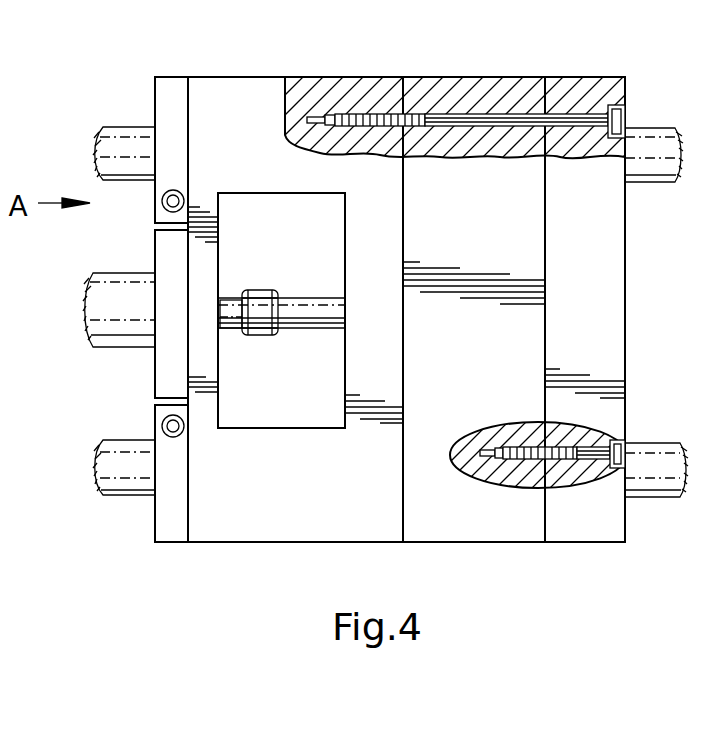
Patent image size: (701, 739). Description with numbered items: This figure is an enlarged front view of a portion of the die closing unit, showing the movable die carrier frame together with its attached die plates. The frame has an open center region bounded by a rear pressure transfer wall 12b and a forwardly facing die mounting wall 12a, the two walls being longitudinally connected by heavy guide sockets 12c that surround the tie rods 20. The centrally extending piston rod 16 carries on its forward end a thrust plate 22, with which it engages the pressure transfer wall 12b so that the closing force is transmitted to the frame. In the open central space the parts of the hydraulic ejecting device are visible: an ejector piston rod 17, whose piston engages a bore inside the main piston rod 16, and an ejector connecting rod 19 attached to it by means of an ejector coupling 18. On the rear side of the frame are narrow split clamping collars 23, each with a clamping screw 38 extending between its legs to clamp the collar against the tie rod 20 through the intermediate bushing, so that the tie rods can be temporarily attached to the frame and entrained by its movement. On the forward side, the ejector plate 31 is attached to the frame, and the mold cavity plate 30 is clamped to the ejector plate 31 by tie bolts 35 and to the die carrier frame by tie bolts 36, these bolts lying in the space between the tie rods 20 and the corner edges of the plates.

The die mounting wall 12a is at (370, 228).
The pressure transfer wall 12b is at (200, 278).
The guide socket 12c is at (282, 520).
The piston rod 16 is at (112, 292).
The ejector piston rod 17 is at (230, 314).
The ejector coupling 18 is at (257, 302).
The ejector connecting rod 19 is at (313, 315).
The tie rod 20 is at (122, 142).
The thrust plate 22 is at (172, 362).
The clamping collar 23 is at (168, 526).
The mold cavity plate 30 is at (590, 527).
The ejector plate 31 is at (452, 525).
The tie bolt 35 is at (506, 465).
The tie bolt 36 is at (490, 112).
The clamping screw 38 is at (183, 429).